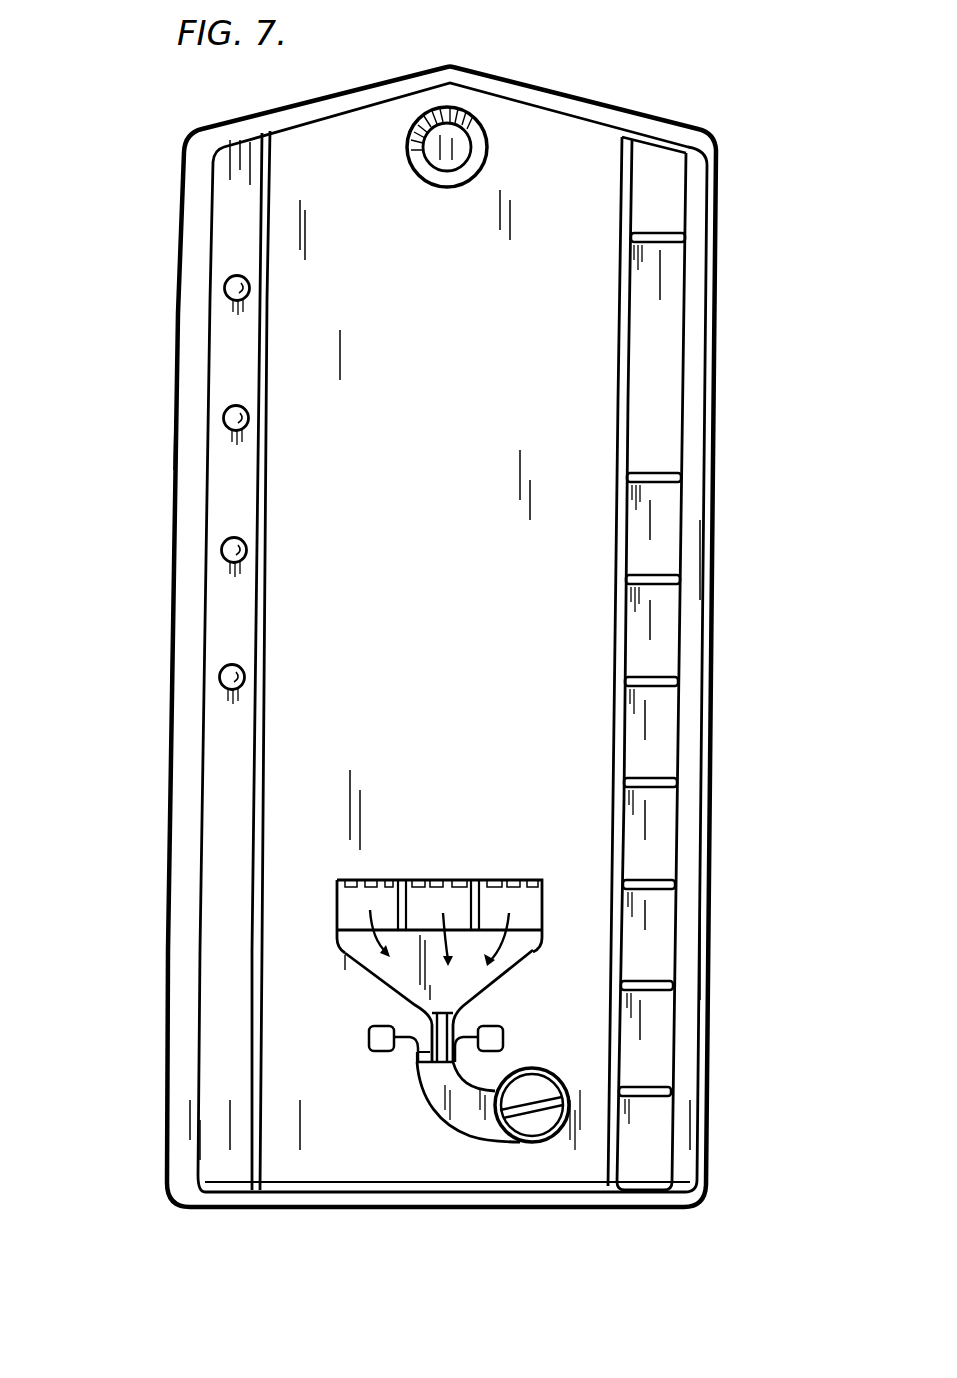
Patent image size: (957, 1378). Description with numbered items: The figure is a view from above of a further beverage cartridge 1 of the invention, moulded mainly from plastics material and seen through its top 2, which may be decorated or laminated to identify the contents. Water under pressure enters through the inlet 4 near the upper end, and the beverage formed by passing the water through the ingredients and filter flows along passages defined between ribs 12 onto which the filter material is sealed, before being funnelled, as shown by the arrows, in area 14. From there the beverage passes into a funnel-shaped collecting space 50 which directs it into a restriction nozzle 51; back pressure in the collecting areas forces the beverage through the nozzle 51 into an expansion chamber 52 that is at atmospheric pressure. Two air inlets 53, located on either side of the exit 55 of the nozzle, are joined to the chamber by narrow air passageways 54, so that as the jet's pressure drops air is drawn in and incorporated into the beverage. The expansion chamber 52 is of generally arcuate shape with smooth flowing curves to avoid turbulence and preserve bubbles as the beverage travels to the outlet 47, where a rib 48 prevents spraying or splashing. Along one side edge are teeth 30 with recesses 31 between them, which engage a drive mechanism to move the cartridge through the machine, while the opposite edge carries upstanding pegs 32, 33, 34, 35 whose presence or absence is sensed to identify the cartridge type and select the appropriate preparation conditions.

The cartridge 1 is at (118, 352).
The top 2 is at (540, 343).
The inlet 4 is at (462, 130).
The ribs 12 is at (470, 905).
The funnelling area 14 is at (358, 955).
The teeth 30 is at (668, 478).
The recesses 31 is at (660, 623).
The peg 32 is at (225, 283).
The peg 33 is at (224, 415).
The peg 34 is at (222, 548).
The peg 35 is at (220, 676).
The outlet 47 is at (520, 1122).
The rib 48 is at (538, 1106).
The collecting space 50 is at (458, 1013).
The restriction nozzle 51 is at (415, 1061).
The expansion chamber 52 is at (418, 1062).
The air inlets 53 is at (368, 1037).
The air passageways 54 is at (423, 1022).
The nozzle exit 55 is at (437, 1068).